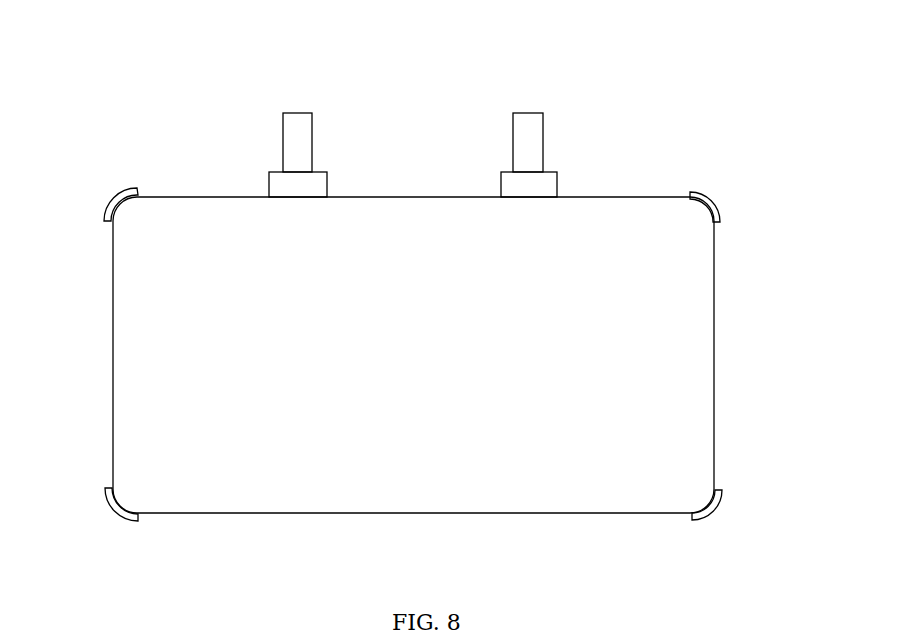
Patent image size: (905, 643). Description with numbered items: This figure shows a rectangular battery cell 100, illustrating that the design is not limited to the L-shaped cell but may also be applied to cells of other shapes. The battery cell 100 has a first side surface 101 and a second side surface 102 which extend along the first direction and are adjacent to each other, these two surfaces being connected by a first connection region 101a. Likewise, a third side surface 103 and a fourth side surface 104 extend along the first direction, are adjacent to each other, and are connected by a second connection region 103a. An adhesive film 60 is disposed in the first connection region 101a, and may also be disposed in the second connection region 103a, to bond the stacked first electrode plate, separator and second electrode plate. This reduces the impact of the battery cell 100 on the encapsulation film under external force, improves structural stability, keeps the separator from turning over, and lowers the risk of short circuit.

The battery cell 100 is at (392, 55).
The first side surface 101 is at (113, 335).
The first connection region 101a is at (128, 503).
The second side surface 102 is at (413, 514).
The third side surface 103 is at (714, 362).
The second connection region 103a is at (705, 224).
The fourth side surface 104 is at (590, 196).
The adhesive film 60 is at (704, 204).